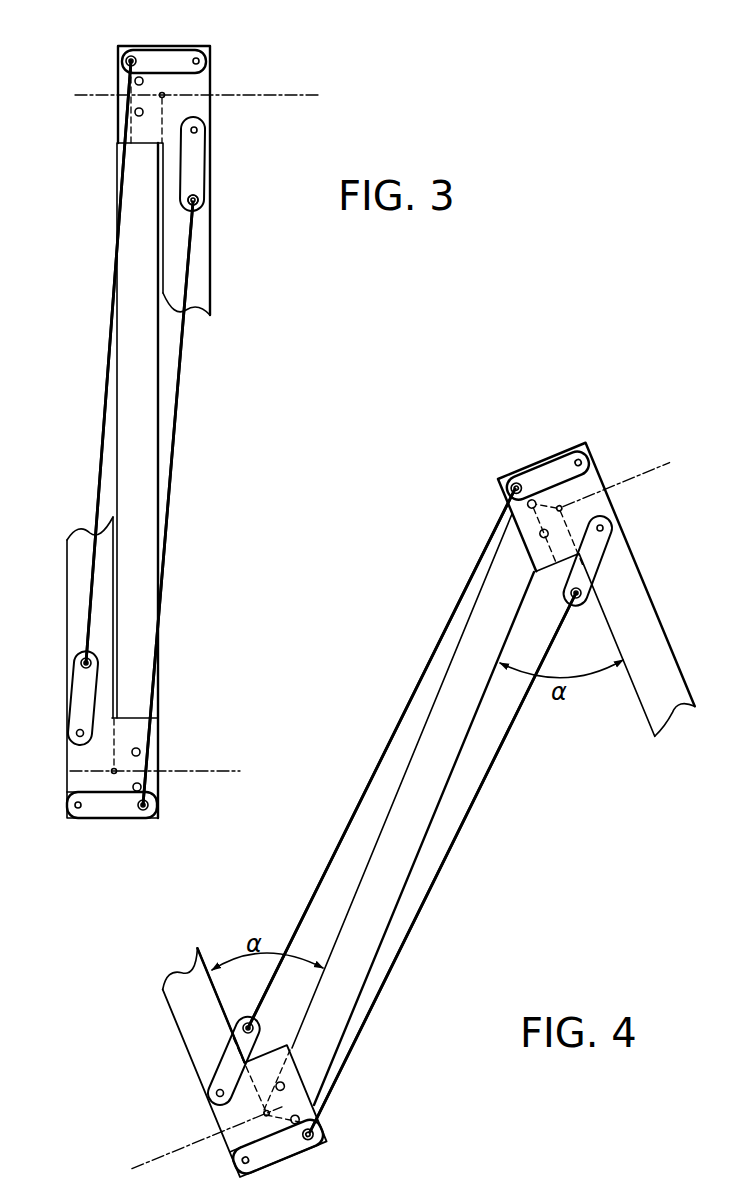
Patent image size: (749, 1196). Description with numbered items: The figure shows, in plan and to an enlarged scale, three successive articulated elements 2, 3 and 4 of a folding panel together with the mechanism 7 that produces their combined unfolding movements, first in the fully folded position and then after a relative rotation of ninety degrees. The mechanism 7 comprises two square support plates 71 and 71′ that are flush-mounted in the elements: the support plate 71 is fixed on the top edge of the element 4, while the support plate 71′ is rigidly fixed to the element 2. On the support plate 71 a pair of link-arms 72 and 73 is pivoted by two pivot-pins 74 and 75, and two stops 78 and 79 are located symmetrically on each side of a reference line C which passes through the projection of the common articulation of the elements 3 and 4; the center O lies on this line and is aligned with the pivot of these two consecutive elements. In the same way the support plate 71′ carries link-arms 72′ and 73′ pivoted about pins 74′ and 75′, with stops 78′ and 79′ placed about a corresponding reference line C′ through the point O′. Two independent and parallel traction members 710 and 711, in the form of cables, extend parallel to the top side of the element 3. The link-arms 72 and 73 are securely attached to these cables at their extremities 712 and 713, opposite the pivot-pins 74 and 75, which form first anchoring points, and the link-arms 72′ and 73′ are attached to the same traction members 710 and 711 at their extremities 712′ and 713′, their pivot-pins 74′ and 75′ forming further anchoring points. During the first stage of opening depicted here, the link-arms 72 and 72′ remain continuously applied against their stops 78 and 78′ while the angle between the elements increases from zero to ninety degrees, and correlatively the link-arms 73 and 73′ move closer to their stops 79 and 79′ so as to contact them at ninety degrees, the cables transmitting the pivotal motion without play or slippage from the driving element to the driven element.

In FIG. 3, the articulated element 2 is at (78, 540).
In FIG. 4, the articulated element 2 is at (192, 1003).
In FIG. 3, the articulated element 3 is at (140, 543).
In FIG. 4, the articulated element 3 is at (365, 953).
In FIG. 3, the articulated element 4 is at (200, 293).
In FIG. 4, the articulated element 4 is at (662, 702).
In FIG. 3, the mechanism 7 is at (181, 476).
In FIG. 4, the mechanism 7 is at (445, 878).
In FIG. 3, the support plate 71 is at (203, 102).
In FIG. 4, the support plate 71 is at (600, 473).
In FIG. 3, the link-arm 72 is at (153, 58).
In FIG. 4, the link-arm 72 is at (540, 470).
In FIG. 3, the link-arm 73 is at (197, 200).
In FIG. 4, the link-arm 73 is at (598, 552).
In FIG. 3, the pivot-pin 74 is at (199, 58).
In FIG. 4, the pivot-pin 74 is at (578, 462).
In FIG. 3, the pivot-pin 75 is at (197, 163).
In FIG. 3, the stop 78 is at (135, 82).
In FIG. 4, the stop 78 is at (525, 510).
In FIG. 3, the stop 79 is at (136, 115).
In FIG. 4, the stop 79 is at (544, 533).
In FIG. 3, the traction member 710 is at (108, 346).
In FIG. 4, the traction member 710 is at (447, 632).
In FIG. 3, the traction member 711 is at (175, 395).
In FIG. 4, the traction member 711 is at (473, 800).
In FIG. 3, the extremity of link-arm 712 is at (131, 55).
In FIG. 4, the extremity of link-arm 712 is at (516, 487).
In FIG. 3, the extremity of link-arm 713 is at (210, 243).
In FIG. 4, the extremity of link-arm 713 is at (576, 593).
In FIG. 3, the support plate 71′ is at (75, 783).
In FIG. 4, the support plate 71′ is at (238, 1135).
In FIG. 3, the link-arm 72′ is at (112, 812).
In FIG. 4, the link-arm 72′ is at (285, 1147).
In FIG. 3, the link-arm 73′ is at (80, 690).
In FIG. 4, the link-arm 73′ is at (222, 1065).
In FIG. 3, the pivot-pin 74′ is at (73, 830).
In FIG. 4, the pivot-pin 74′ is at (245, 1160).
In FIG. 3, the pivot-pin 75′ is at (76, 730).
In FIG. 4, the pivot-pin 75′ is at (220, 1093).
In FIG. 3, the stop 78′ is at (141, 786).
In FIG. 4, the stop 78′ is at (295, 1108).
In FIG. 3, the stop 79′ is at (140, 750).
In FIG. 4, the stop 79′ is at (280, 1086).
In FIG. 3, the extremity of link-arm 712′ is at (159, 815).
In FIG. 4, the extremity of link-arm 712′ is at (308, 1135).
In FIG. 3, the extremity of link-arm 713′ is at (83, 655).
In FIG. 4, the extremity of link-arm 713′ is at (248, 1028).
In FIG. 3, the center O is at (167, 94).
In FIG. 4, the center O is at (572, 508).
In FIG. 3, the lower pivot center O′ is at (108, 771).
In FIG. 4, the lower pivot center O′ is at (254, 1113).
In FIG. 3, the reference line C is at (208, 91).
In FIG. 4, the reference line C is at (650, 462).
In FIG. 3, the lower axis line C′ is at (170, 764).
In FIG. 4, the lower axis line C′ is at (185, 1140).